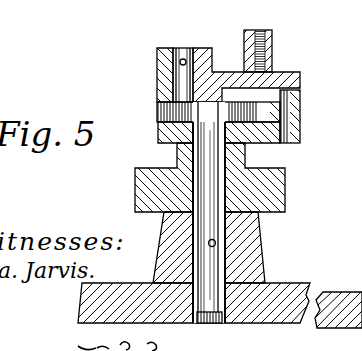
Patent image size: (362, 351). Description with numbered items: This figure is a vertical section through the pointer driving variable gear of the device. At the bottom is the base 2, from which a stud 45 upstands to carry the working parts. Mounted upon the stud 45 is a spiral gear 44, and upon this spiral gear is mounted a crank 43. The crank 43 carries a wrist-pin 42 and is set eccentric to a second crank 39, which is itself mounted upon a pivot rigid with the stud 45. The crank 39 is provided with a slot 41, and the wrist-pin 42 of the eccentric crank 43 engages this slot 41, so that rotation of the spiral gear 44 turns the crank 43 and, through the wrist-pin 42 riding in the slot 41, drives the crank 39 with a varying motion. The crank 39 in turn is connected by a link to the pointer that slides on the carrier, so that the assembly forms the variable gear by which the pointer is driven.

The base 2 is at (287, 292).
The crank 39 is at (302, 78).
The slot 41 is at (300, 98).
The wrist-pin 42 is at (300, 116).
The crank 43 is at (300, 138).
The spiral gear 44 is at (265, 197).
The stud 45 is at (210, 218).